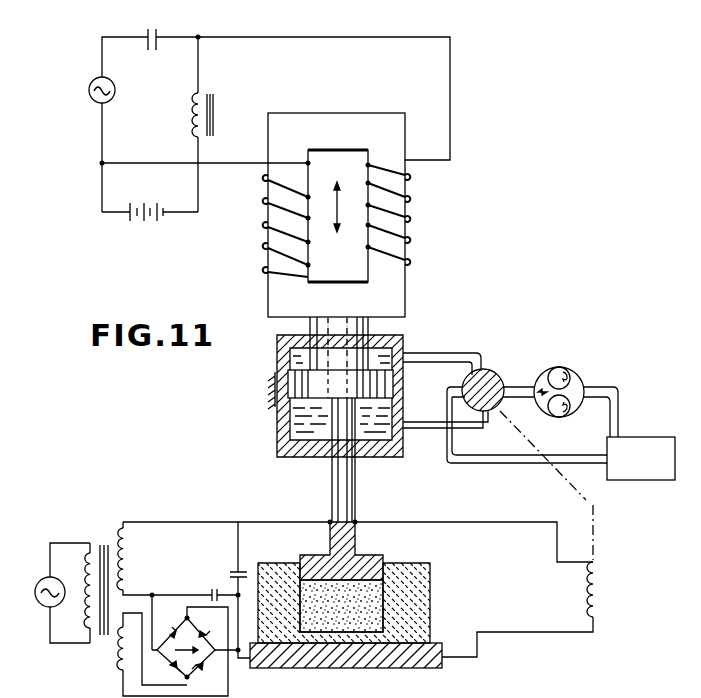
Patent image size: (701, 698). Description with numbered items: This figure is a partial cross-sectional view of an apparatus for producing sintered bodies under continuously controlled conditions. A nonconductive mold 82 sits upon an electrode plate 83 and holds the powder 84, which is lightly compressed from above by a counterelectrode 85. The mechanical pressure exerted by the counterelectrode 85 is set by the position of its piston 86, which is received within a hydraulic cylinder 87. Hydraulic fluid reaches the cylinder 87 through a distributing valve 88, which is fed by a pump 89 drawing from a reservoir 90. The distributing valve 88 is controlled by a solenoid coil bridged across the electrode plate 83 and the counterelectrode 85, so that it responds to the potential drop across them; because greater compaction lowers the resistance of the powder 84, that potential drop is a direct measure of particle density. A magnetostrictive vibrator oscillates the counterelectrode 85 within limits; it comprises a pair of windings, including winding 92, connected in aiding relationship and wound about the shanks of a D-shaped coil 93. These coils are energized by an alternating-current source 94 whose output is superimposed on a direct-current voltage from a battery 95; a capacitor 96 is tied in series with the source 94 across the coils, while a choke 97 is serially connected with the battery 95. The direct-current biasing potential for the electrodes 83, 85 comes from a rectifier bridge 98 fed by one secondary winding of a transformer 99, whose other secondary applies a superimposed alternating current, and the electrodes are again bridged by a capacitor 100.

The nonconductive mold 82 is at (425, 600).
The electrode plate 83 is at (420, 662).
The powder 84 is at (378, 588).
The counterelectrode 85 is at (365, 566).
The piston 86 is at (375, 373).
The hydraulic cylinder 87 is at (317, 439).
The distributing valve 88 is at (498, 378).
The pump 89 is at (576, 378).
The reservoir 90 is at (645, 447).
The winding 92 is at (408, 217).
The D-shaped coil 93 is at (398, 291).
The alternating-current source 94 is at (92, 98).
The battery 95 is at (143, 222).
The capacitor 96 is at (157, 34).
The choke 97 is at (215, 95).
The rectifier bridge 98 is at (211, 664).
The transformer 99 is at (104, 640).
The capacitor 100 is at (233, 569).